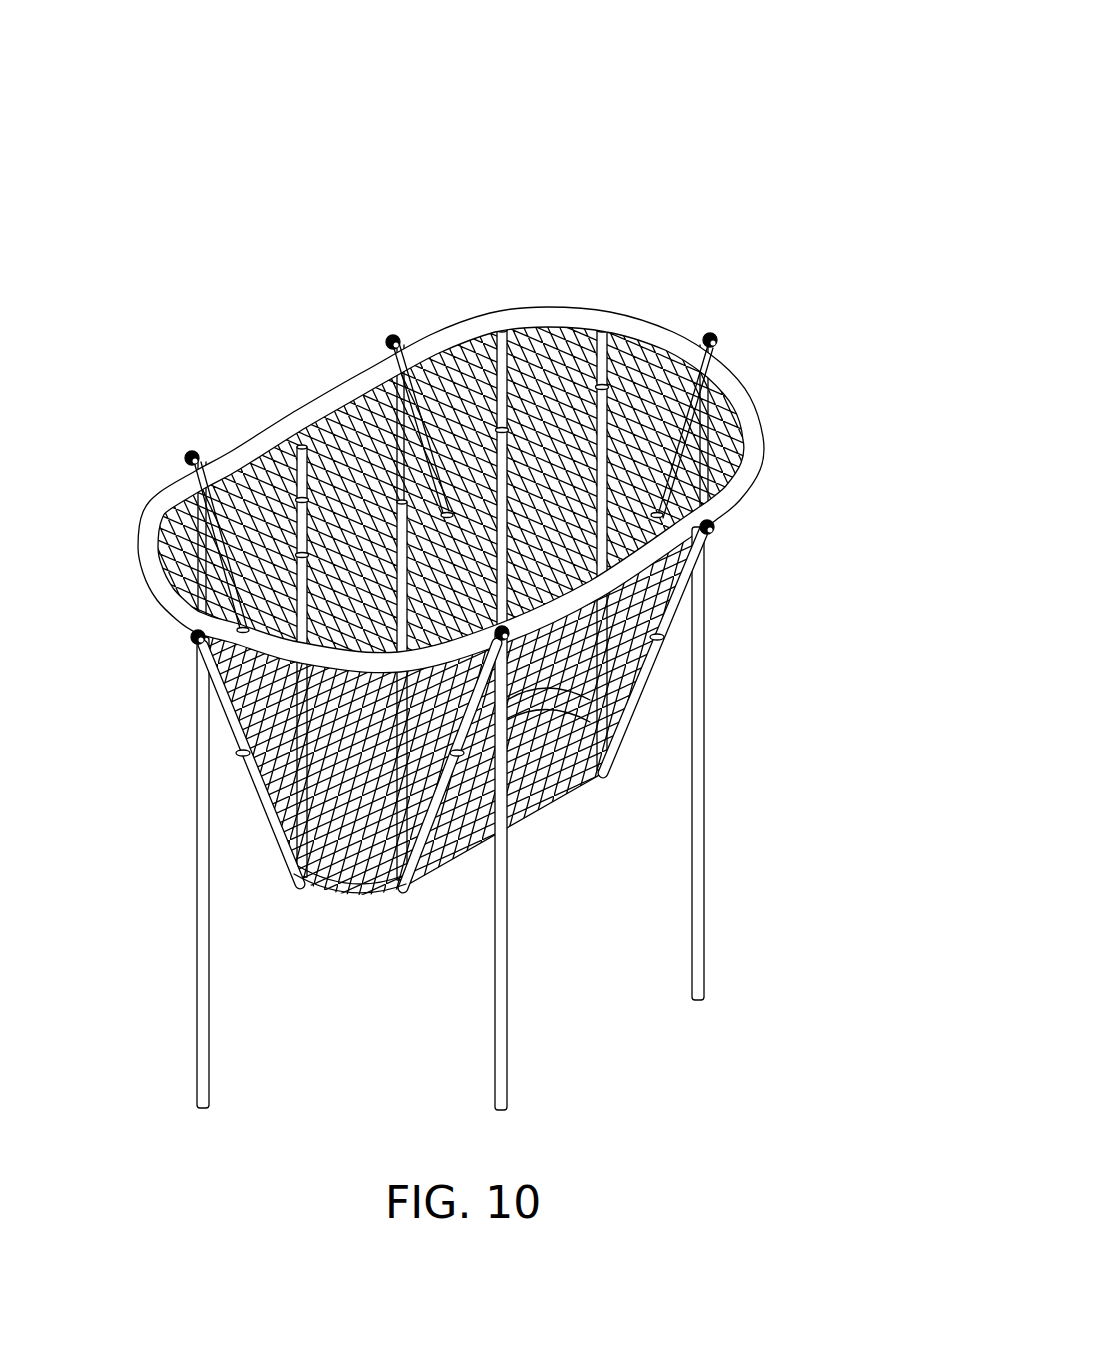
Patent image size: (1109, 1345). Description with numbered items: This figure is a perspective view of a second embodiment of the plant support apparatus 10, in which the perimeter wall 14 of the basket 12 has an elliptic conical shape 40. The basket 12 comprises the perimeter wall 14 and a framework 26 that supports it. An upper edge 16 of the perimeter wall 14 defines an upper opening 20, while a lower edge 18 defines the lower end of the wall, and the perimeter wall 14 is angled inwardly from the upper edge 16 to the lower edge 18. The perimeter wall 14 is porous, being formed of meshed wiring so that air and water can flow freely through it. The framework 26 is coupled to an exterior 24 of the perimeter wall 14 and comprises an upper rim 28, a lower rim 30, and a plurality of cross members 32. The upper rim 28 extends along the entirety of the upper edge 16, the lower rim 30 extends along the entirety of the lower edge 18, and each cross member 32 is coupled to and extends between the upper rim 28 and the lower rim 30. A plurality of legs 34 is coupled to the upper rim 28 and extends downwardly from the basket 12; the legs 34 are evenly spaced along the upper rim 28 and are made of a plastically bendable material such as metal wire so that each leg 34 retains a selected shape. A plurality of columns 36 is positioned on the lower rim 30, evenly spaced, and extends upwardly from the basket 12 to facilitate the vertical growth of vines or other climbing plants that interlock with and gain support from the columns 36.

The plant support apparatus 10 is at (553, 198).
The basket 12 is at (770, 348).
The perimeter wall 14 is at (648, 372).
The upper edge 16 is at (235, 700).
The lower edge 18 is at (553, 800).
The upper opening 20 is at (458, 373).
The exterior 24 is at (300, 795).
The framework 26 is at (768, 448).
The upper rim 28 is at (747, 413).
The lower rim 30 is at (370, 892).
The cross member 32 is at (405, 380).
The leg 34 is at (447, 510).
The column 36 is at (300, 445).
The elliptic conical shape 40 is at (142, 503).